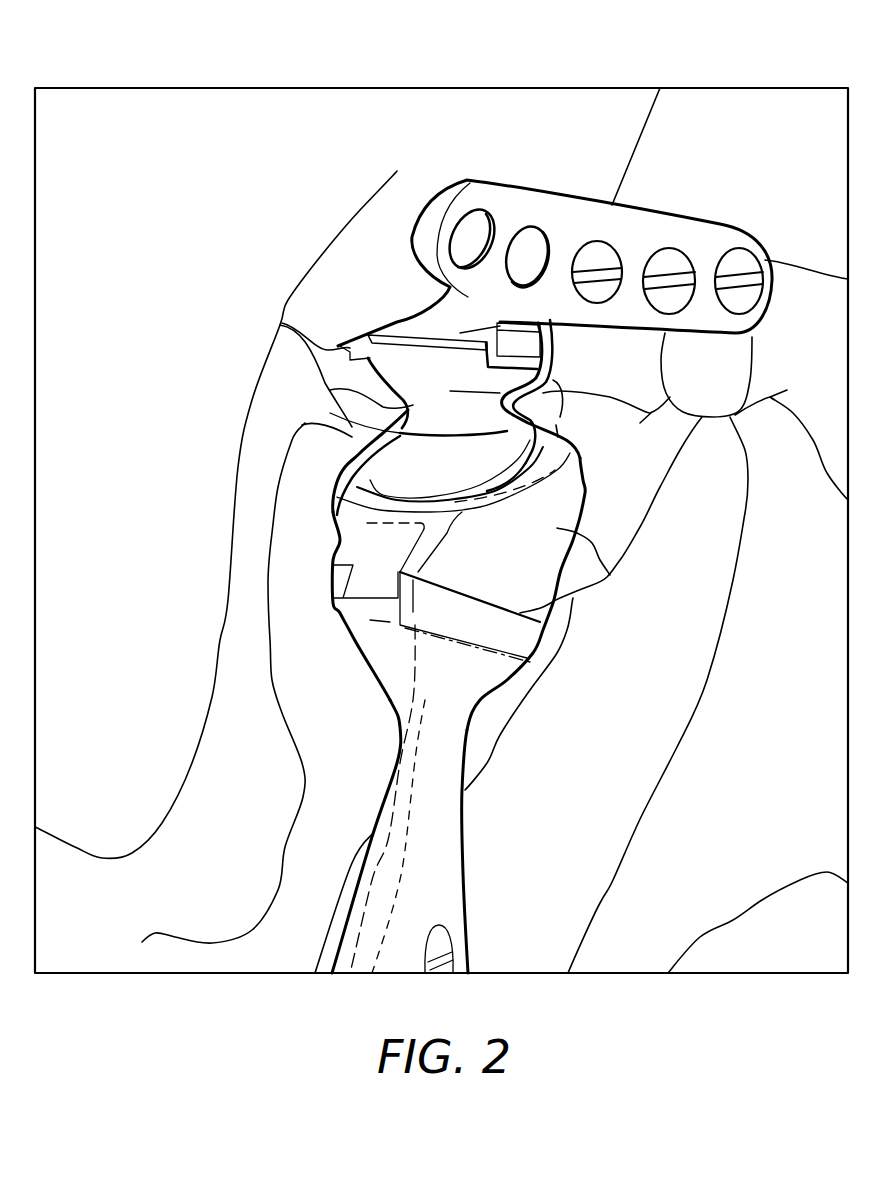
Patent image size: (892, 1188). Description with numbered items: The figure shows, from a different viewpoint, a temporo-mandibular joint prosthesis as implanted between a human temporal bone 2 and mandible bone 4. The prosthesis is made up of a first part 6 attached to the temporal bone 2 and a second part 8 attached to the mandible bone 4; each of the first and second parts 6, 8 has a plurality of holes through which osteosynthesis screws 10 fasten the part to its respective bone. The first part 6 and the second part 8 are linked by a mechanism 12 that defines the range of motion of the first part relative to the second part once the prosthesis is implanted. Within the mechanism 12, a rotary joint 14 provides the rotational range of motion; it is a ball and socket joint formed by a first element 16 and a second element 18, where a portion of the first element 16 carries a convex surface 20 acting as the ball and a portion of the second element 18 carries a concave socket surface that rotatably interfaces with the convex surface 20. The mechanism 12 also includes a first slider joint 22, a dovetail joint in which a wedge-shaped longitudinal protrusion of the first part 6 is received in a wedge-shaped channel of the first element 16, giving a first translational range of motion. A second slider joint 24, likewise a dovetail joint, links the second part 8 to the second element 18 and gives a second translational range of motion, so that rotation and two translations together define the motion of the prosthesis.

The temporal bone 2 is at (515, 165).
The mandible bone 4 is at (500, 955).
The first part 6 is at (555, 248).
The second part 8 is at (452, 837).
The osteosynthesis screws 10 is at (731, 257).
The mechanism 12 is at (337, 453).
The rotary joint 14 is at (595, 436).
The first element 16 is at (330, 390).
The second element 18 is at (612, 577).
The convex surface 20 is at (335, 523).
The first slider joint 22 is at (520, 342).
The second slider joint 24 is at (348, 630).